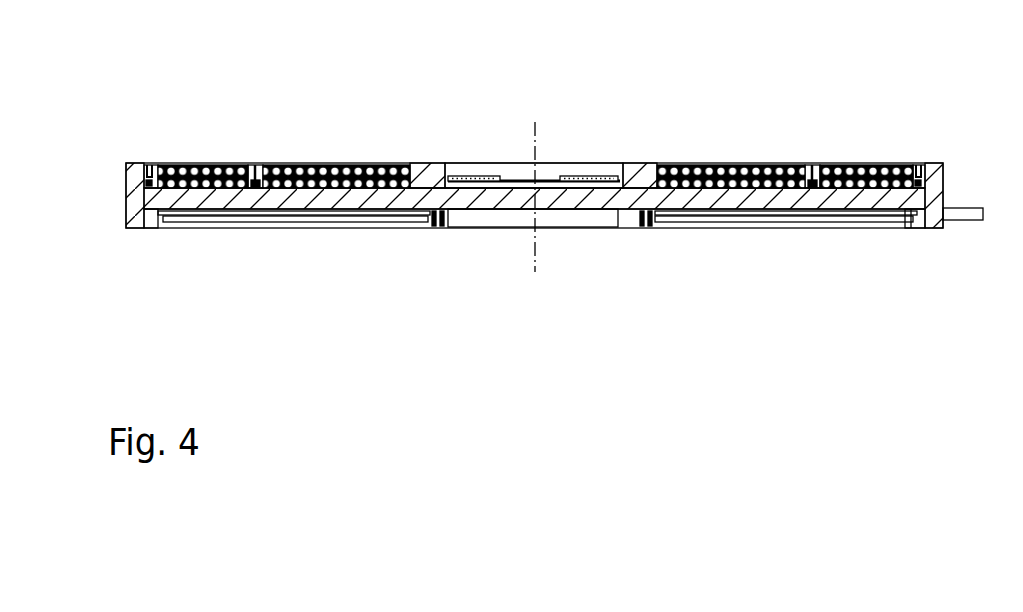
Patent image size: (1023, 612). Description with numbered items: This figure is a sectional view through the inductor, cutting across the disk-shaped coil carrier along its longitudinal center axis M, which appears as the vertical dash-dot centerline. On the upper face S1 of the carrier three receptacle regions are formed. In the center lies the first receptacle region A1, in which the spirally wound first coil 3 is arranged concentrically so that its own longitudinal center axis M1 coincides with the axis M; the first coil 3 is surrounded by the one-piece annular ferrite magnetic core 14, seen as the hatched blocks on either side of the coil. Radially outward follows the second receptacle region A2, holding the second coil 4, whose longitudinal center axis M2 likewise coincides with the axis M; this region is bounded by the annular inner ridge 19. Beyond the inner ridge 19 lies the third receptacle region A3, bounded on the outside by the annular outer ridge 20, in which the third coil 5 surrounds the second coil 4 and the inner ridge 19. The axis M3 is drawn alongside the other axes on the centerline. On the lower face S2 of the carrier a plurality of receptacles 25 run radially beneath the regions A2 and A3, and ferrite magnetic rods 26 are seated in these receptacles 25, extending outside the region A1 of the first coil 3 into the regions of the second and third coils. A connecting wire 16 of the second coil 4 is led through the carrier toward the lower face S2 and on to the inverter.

The annular outer ridge 20 is at (134, 163).
The third coil 5 is at (200, 163).
The annular inner ridge 19 is at (253, 163).
The second coil 4 is at (310, 163).
The magnetic core 14 is at (362, 163).
The first coil 3 is at (590, 163).
The upper face S1 is at (457, 161).
The receptacles 25 is at (156, 228).
The magnetic rods 26 is at (263, 228).
The third receptacle region A3 is at (200, 228).
The second receptacle region A2 is at (383, 228).
The lower face S2 is at (456, 242).
The longitudinal center axis M is at (535, 250).
The longitudinal center axis of the first coil M1 is at (532, 359).
The longitudinal center axis of the second coil M2 is at (532, 389).
The center axis M3 is at (532, 419).
The first receptacle region A1 is at (567, 193).
The connecting wire 16 is at (970, 221).